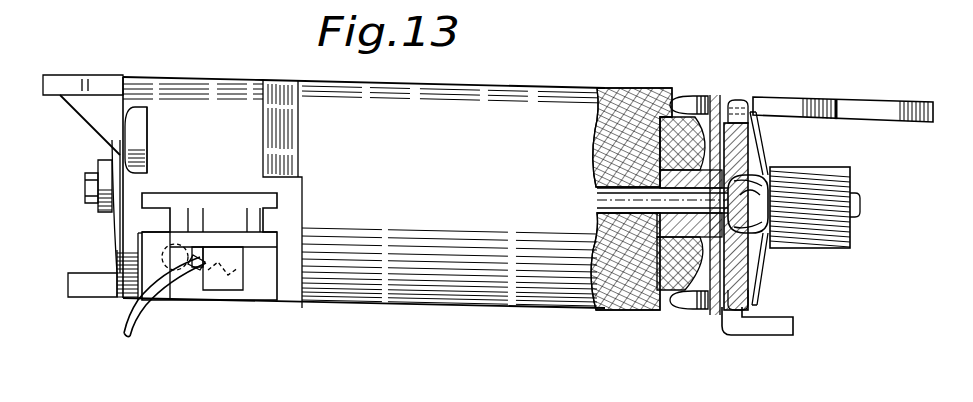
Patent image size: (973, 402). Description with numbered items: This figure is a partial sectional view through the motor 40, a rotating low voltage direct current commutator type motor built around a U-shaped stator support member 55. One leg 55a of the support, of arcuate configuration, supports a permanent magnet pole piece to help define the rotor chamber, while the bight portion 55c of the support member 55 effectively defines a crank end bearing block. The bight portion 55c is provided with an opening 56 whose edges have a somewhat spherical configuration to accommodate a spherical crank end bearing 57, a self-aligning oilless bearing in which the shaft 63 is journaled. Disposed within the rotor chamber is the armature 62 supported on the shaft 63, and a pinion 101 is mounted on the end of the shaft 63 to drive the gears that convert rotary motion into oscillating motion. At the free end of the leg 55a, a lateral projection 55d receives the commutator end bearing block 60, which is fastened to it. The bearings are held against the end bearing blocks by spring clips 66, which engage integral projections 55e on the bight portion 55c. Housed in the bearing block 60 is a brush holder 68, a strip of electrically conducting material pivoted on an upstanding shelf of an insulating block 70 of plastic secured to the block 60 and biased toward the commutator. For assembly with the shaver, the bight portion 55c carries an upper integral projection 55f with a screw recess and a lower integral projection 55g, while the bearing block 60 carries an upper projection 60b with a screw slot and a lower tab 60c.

The motor 40 is at (440, 337).
The U-shaped stator support member 55 is at (750, 123).
The leg of stator support member 55a is at (424, 104).
The bight portion 55c is at (752, 157).
The lateral projections 55d is at (268, 128).
The integral projections 55e is at (744, 100).
The first pair of integral projections 55f is at (891, 104).
The second set of integral projections 55g is at (778, 327).
The opening 56 is at (760, 234).
The spherical crank end bearing 57 is at (748, 200).
The commutator end bearing block 60 is at (217, 93).
The first pair of integral projections 60b is at (60, 75).
The projections or tabs 60c is at (80, 300).
The armature 62 is at (675, 122).
The shaft 63 is at (597, 175).
The spring clips 66 is at (110, 235).
The brush holder 68 is at (223, 223).
The insulating block 70 is at (172, 200).
The pinion 101 is at (833, 170).